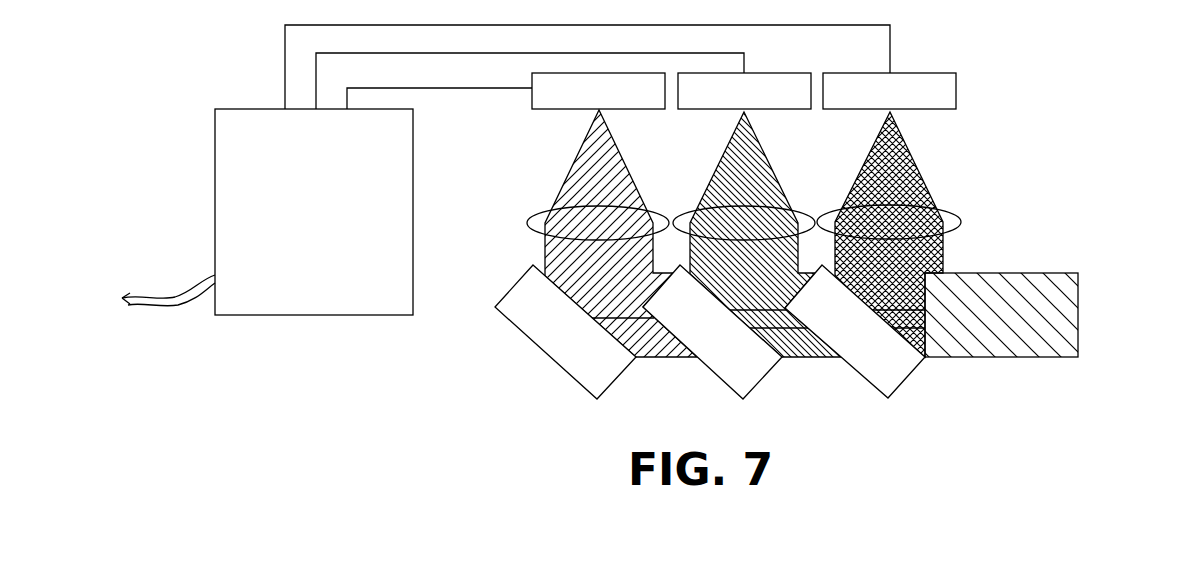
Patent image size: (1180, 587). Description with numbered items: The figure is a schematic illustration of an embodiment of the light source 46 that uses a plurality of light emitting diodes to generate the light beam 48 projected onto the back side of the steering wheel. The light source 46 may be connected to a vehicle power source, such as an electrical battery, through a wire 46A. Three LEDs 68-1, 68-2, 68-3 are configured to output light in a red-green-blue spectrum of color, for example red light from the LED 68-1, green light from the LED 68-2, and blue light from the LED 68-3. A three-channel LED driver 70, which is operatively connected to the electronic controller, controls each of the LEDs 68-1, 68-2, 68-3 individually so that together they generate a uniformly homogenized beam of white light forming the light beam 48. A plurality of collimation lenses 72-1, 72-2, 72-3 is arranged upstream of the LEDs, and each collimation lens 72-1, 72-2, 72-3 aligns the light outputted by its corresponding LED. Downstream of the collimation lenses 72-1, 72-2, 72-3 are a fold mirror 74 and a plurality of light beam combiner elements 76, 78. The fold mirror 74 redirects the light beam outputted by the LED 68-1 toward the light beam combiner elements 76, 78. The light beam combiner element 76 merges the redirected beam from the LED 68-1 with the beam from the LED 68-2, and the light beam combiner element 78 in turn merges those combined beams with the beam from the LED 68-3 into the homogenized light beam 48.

The light source 46 is at (1048, 182).
The wire 46A is at (150, 306).
The light beam 48 is at (1078, 290).
The LED 68-1 is at (548, 110).
The LED 68-2 is at (697, 110).
The LED 68-3 is at (845, 110).
The 3-channel LED driver 70 is at (313, 316).
The collimation lens 72-1 is at (535, 213).
The collimation lens 72-2 is at (684, 213).
The collimation lens 72-3 is at (829, 213).
The fold mirror 74 is at (553, 363).
The light beam combiner element 76 is at (703, 367).
The light beam combiner element 78 is at (846, 367).